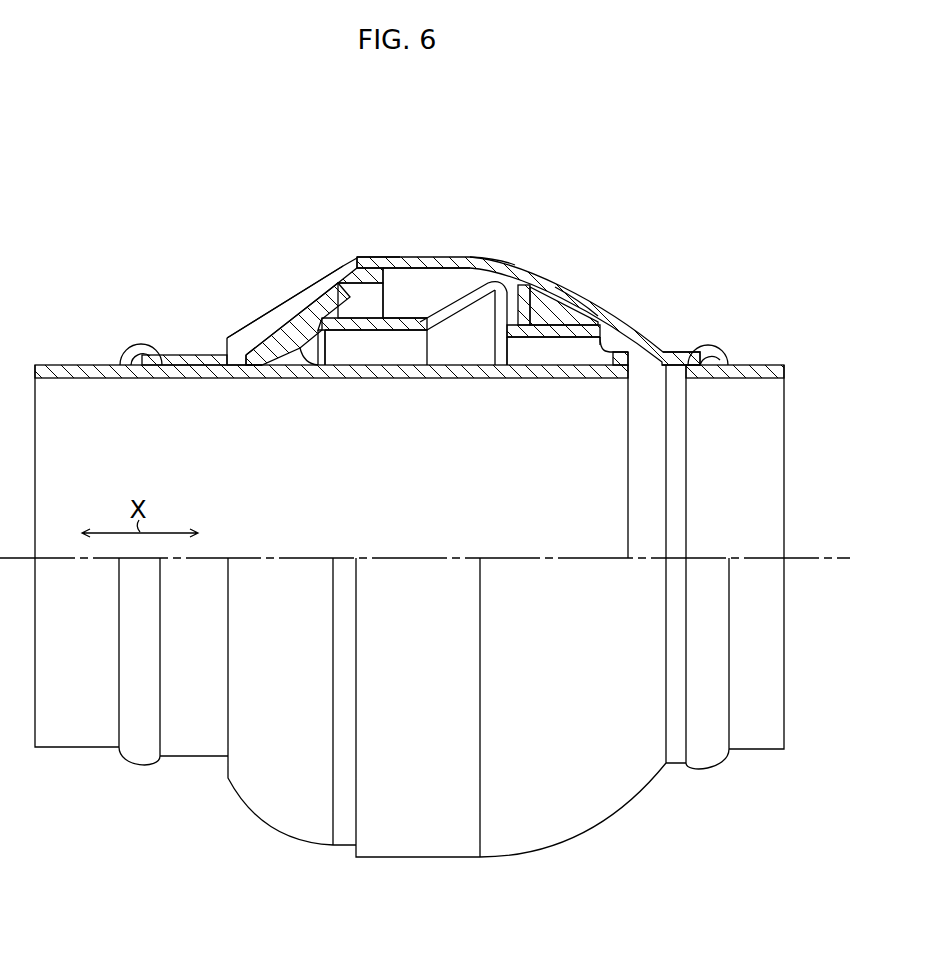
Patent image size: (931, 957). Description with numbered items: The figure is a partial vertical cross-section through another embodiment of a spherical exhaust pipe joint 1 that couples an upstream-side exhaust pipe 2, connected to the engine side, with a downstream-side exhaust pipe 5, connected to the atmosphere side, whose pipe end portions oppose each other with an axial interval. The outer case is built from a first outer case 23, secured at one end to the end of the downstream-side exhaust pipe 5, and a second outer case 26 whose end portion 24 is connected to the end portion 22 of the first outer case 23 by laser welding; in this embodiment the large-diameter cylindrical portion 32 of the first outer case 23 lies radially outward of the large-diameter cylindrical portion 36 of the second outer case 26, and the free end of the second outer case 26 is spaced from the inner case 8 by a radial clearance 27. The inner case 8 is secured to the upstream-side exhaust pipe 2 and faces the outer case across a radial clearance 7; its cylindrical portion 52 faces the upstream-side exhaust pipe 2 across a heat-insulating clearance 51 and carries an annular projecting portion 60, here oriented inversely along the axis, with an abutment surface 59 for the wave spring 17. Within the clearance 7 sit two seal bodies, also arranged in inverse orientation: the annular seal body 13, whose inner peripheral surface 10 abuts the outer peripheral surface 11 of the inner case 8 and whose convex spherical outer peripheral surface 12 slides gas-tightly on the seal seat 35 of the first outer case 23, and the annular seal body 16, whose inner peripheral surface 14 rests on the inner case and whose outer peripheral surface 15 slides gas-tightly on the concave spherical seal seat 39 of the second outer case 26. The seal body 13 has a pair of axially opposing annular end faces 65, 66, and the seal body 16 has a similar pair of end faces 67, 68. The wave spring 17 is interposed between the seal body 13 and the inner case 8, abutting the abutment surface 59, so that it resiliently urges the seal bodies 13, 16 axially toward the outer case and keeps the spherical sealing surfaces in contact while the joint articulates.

The spherical exhaust pipe joint 1 is at (418, 257).
The upstream-side exhaust pipe 2 is at (68, 365).
The downstream-side exhaust pipe 5 is at (758, 365).
The clearance 7 is at (432, 287).
The inner case 8 is at (393, 327).
The inner peripheral surface 10 is at (588, 345).
The outer peripheral surface 11 is at (606, 306).
The outer peripheral surface 12 is at (575, 300).
The annular seal body 13 is at (562, 327).
The inner peripheral surface 14 is at (299, 353).
The outer peripheral surface 15 is at (273, 313).
The annular seal body 16 is at (263, 358).
The wave spring 17 is at (524, 322).
The end portion 22 is at (361, 262).
The first outer case 23 is at (495, 261).
The end portion 24 is at (360, 280).
The second outer case 26 is at (243, 320).
The radial clearance 27 is at (232, 352).
The large-diameter cylindrical portion 32 is at (394, 262).
The seal seat 35 is at (548, 297).
The large-diameter cylindrical portion 36 is at (352, 270).
The seal seat 39 is at (272, 337).
The heat-insulating clearance 51 is at (436, 350).
The cylindrical portion 52 is at (356, 340).
The abutment surface 59 is at (494, 320).
The annular projecting portion 60 is at (489, 305).
The annular end face 65 is at (601, 340).
The annular end face 66 is at (537, 335).
The annular end face 67 is at (322, 353).
The annular end face 68 is at (251, 353).